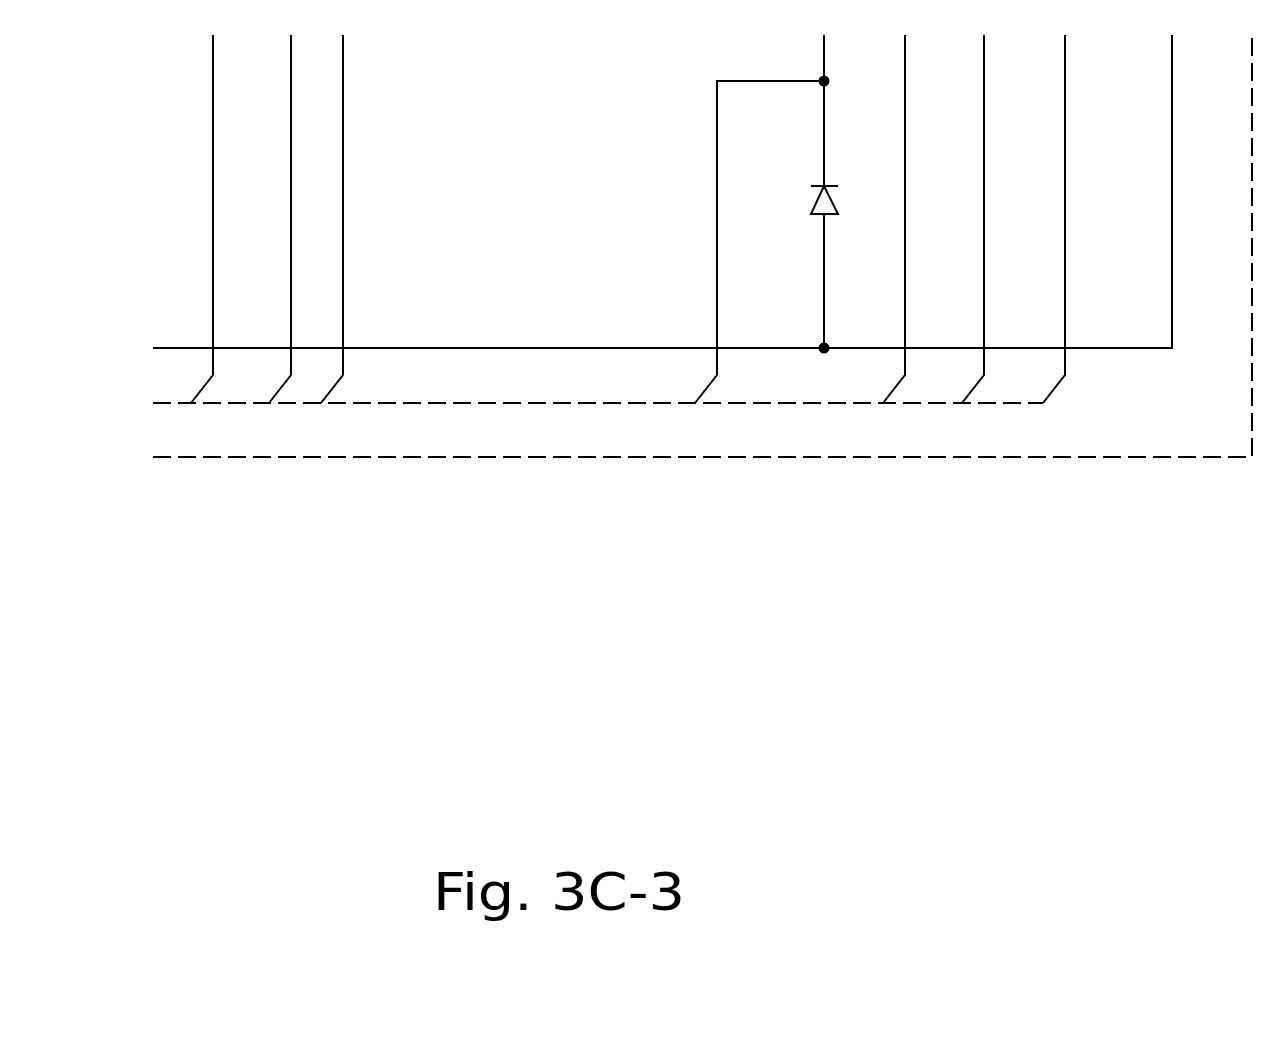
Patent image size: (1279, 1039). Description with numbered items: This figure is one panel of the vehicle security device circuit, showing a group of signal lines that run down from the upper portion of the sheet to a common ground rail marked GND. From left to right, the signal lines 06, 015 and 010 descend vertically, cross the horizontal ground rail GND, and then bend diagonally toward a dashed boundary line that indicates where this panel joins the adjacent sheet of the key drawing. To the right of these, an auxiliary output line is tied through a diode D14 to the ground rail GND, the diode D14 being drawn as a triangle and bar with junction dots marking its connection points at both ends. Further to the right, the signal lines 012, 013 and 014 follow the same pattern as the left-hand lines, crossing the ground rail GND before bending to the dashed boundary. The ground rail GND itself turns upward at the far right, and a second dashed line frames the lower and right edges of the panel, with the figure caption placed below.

The signal line 06 is at (197, 219).
The signal line 015 is at (275, 219).
The signal line 010 is at (327, 219).
The diode D14 is at (805, 194).
The signal line 012 is at (889, 219).
The signal line 013 is at (968, 219).
The signal line 014 is at (1049, 219).
The ground line GND is at (1135, 330).